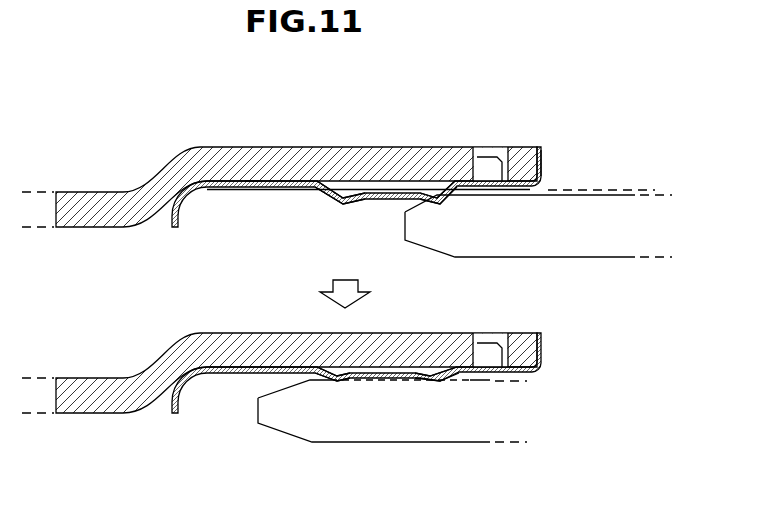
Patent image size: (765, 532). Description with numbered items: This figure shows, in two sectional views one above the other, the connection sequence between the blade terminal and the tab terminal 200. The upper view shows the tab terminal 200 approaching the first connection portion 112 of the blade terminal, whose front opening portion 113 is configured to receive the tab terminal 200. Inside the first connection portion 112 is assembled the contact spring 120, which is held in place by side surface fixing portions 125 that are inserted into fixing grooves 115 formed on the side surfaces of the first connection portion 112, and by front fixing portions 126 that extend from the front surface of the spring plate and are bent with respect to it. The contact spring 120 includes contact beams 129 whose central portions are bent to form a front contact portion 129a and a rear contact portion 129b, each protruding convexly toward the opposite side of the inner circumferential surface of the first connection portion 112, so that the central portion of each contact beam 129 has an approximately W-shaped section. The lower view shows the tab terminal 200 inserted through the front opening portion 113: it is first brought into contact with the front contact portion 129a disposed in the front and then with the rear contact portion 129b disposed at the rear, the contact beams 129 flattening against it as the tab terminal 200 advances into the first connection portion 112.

The first connection portion 112 is at (320, 147).
The front opening portion 113 is at (523, 189).
The fixing groove 115 is at (503, 160).
The contact spring 120 is at (252, 178).
The side surface fixing portion 125 is at (487, 160).
The front fixing portion 126 is at (542, 160).
The contact beam 129 is at (284, 150).
The front contact portion 129a is at (437, 201).
The rear contact portion 129b is at (343, 204).
The tab terminal 200 is at (610, 258).